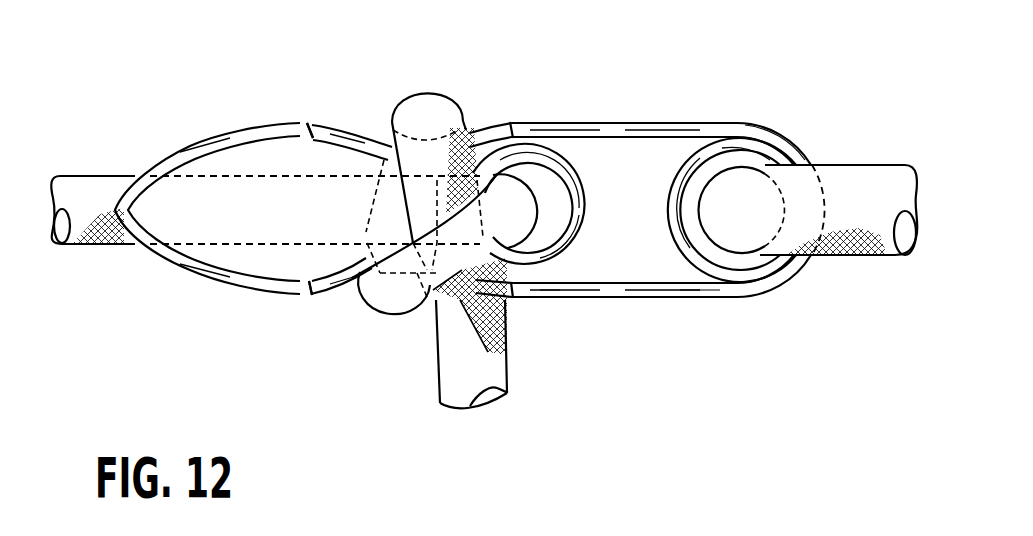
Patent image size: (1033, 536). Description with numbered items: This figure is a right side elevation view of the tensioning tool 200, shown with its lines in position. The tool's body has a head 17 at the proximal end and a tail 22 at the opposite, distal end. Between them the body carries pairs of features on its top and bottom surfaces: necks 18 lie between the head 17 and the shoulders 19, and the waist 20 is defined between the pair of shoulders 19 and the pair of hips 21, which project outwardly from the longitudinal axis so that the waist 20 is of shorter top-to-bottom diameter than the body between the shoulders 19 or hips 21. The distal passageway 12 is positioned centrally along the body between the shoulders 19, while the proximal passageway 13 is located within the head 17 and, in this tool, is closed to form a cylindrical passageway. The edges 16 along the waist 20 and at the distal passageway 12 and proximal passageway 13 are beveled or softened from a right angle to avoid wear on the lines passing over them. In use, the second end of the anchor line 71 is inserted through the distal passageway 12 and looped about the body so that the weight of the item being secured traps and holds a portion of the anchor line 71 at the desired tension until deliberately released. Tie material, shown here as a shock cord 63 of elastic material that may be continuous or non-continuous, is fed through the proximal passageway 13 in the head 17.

The tensioning tool 200 is at (227, 305).
The tail 22 is at (232, 156).
The hips 21 is at (311, 124).
The waist 20 is at (349, 136).
The shoulders 19 is at (480, 128).
The distal passageway 12 is at (543, 180).
The proximal passageway 13 is at (700, 176).
The necks 18 is at (738, 168).
The head 17 is at (788, 140).
The edges 16 is at (555, 253).
The anchor line 71 is at (90, 180).
The shock cord 63 is at (878, 256).